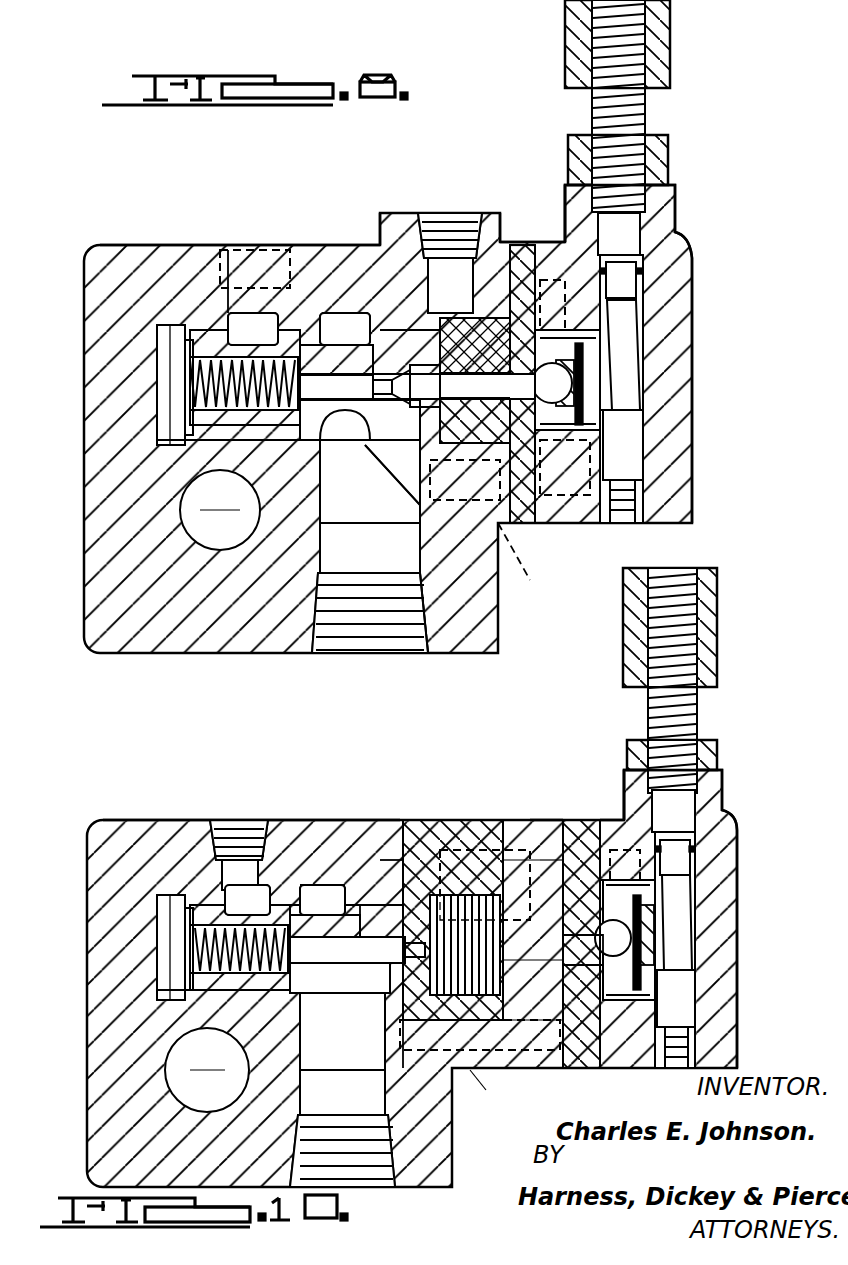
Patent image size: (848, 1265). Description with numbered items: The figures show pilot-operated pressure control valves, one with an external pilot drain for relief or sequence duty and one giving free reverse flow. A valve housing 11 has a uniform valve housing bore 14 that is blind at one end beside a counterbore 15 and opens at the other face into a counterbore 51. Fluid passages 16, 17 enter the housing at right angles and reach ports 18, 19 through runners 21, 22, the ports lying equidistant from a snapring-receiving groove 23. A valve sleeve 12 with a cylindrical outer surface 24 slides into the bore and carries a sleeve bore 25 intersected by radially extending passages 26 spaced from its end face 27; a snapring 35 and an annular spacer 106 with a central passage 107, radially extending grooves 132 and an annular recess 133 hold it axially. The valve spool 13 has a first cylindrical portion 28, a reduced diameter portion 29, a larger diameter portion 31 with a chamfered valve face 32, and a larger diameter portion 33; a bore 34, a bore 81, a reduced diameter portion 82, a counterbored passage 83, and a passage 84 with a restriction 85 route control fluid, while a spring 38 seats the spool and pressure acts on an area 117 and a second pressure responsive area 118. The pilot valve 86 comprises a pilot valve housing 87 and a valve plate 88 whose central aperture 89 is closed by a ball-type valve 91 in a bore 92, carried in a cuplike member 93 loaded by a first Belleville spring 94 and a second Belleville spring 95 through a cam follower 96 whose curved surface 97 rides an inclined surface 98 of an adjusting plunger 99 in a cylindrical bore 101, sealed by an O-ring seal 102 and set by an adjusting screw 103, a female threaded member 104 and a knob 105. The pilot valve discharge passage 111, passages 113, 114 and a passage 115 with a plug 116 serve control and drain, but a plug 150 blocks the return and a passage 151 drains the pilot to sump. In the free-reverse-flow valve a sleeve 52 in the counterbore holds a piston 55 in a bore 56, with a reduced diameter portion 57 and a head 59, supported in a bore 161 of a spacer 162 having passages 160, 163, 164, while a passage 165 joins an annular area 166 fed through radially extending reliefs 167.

In FIG. 8, the valve housing 11 is at (323, 228).
In FIG. 10, the valve housing 11 is at (323, 803).
In FIG. 8, the valve sleeve 12 is at (452, 285).
In FIG. 10, the valve sleeve 12 is at (392, 866).
In FIG. 10, the valve spool 13 is at (372, 910).
In FIG. 8, the valve housing bore 14 is at (388, 330).
In FIG. 10, the valve housing bore 14 is at (300, 905).
In FIG. 8, the counterbore 15 is at (160, 335).
In FIG. 10, the counterbore 15 is at (160, 900).
In FIG. 8, the fluid passage 16 is at (108, 560).
In FIG. 10, the fluid passage 16 is at (172, 1098).
In FIG. 8, the fluid passage 17 is at (322, 612).
In FIG. 10, the fluid passage 17 is at (300, 1128).
In FIG. 8, the port 18 is at (262, 258).
In FIG. 10, the port 18 is at (262, 870).
In FIG. 8, the port 19 is at (338, 330).
In FIG. 10, the port 19 is at (340, 870).
In FIG. 8, the runner 21 is at (220, 510).
In FIG. 10, the runner 21 is at (207, 1070).
In FIG. 8, the runner 22 is at (440, 556).
In FIG. 10, the runner 22 is at (323, 1094).
In FIG. 8, the snapring-receiving groove 23 is at (280, 325).
In FIG. 8, the cylindrical outer surface 24 is at (396, 530).
In FIG. 10, the cylindrical outer surface 24 is at (366, 1094).
In FIG. 8, the valve sleeve bore 25 is at (390, 470).
In FIG. 10, the valve sleeve bore 25 is at (361, 1062).
In FIG. 8, the radially extending passages 26 is at (350, 342).
In FIG. 10, the radially extending passages 26 is at (340, 914).
In FIG. 8, the end face 27 is at (372, 328).
In FIG. 10, the end face 27 is at (246, 990).
In FIG. 8, the first cylindrical portion 28 is at (352, 530).
In FIG. 10, the first cylindrical portion 28 is at (320, 1062).
In FIG. 8, the reduced diameter portion 29 is at (305, 425).
In FIG. 10, the reduced diameter portion 29 is at (292, 1000).
In FIG. 8, the larger diameter portion 31 is at (308, 285).
In FIG. 10, the larger diameter portion 31 is at (275, 885).
In FIG. 10, the chamfered valve face 32 is at (212, 860).
In FIG. 8, the larger diameter portion 33 is at (185, 440).
In FIG. 10, the larger diameter portion 33 is at (240, 949).
In FIG. 8, the bore 34 is at (180, 440).
In FIG. 10, the bore 34 is at (182, 993).
In FIG. 8, the snapring 35 is at (246, 500).
In FIG. 10, the snapring 35 is at (236, 1060).
In FIG. 8, the spring 38 is at (158, 372).
In FIG. 10, the spring 38 is at (158, 938).
In FIG. 8, the counterbore 51 is at (520, 262).
In FIG. 10, the counterbore 51 is at (482, 850).
In FIG. 10, the sleeve 52 is at (512, 850).
In FIG. 10, the piston 55 is at (548, 850).
In FIG. 10, the bore 56 is at (492, 822).
In FIG. 10, the reduced diameter portion 57 is at (530, 1013).
In FIG. 10, the head 59 is at (491, 885).
In FIG. 8, the bore 81 is at (345, 442).
In FIG. 10, the bore 81 is at (300, 1040).
In FIG. 8, the reduced diameter portion 82 is at (355, 378).
In FIG. 10, the reduced diameter portion 82 is at (440, 968).
In FIG. 8, the counterbored passage 83 is at (418, 372).
In FIG. 10, the counterbored passage 83 is at (436, 940).
In FIG. 8, the passage 84 is at (230, 300).
In FIG. 10, the passage 84 is at (200, 880).
In FIG. 8, the restriction 85 is at (240, 330).
In FIG. 10, the restriction 85 is at (222, 900).
In FIG. 8, the pilot valve 86 is at (697, 224).
In FIG. 10, the pilot valve 86 is at (740, 802).
In FIG. 8, the pilot valve housing 87 is at (640, 352).
In FIG. 10, the pilot valve housing 87 is at (700, 938).
In FIG. 8, the valve plate 88 is at (572, 240).
In FIG. 10, the valve plate 88 is at (622, 830).
In FIG. 8, the central aperture 89 is at (522, 352).
In FIG. 10, the central aperture 89 is at (605, 860).
In FIG. 8, the ball-type valve 91 is at (540, 380).
In FIG. 10, the ball-type valve 91 is at (605, 962).
In FIG. 10, the bore 92 is at (616, 918).
In FIG. 8, the cuplike member 93 is at (486, 421).
In FIG. 10, the cuplike member 93 is at (624, 929).
In FIG. 8, the first Belleville spring 94 is at (575, 350).
In FIG. 10, the first Belleville spring 94 is at (645, 1002).
In FIG. 8, the second Belleville spring 95 is at (643, 430).
In FIG. 10, the second Belleville spring 95 is at (668, 982).
In FIG. 8, the cam follower 96 is at (583, 385).
In FIG. 10, the cam follower 96 is at (642, 912).
In FIG. 8, the curved surface 97 is at (586, 420).
In FIG. 10, the curved surface 97 is at (632, 970).
In FIG. 8, the inclined surface 98 is at (572, 368).
In FIG. 10, the inclined surface 98 is at (656, 958).
In FIG. 8, the adjusting plunger 99 is at (637, 278).
In FIG. 10, the adjusting plunger 99 is at (692, 866).
In FIG. 8, the cylindrical bore 101 is at (645, 472).
In FIG. 10, the cylindrical bore 101 is at (696, 1000).
In FIG. 8, the O-ring seal 102 is at (645, 262).
In FIG. 10, the O-ring seal 102 is at (697, 846).
In FIG. 8, the adjusting screw 103 is at (646, 120).
In FIG. 10, the adjusting screw 103 is at (698, 712).
In FIG. 8, the female threaded member 104 is at (668, 158).
In FIG. 10, the female threaded member 104 is at (718, 758).
In FIG. 8, the knob 105 is at (660, 30).
In FIG. 10, the knob 105 is at (712, 628).
In FIG. 8, the annular spacer 106 is at (470, 500).
In FIG. 8, the central passage 107 is at (475, 358).
In FIG. 10, the pilot valve discharge passage 111 is at (428, 1062).
In FIG. 8, the passage 113 is at (553, 526).
In FIG. 8, the passage 114 is at (604, 526).
In FIG. 10, the passage 114 is at (632, 1070).
In FIG. 8, the passage 115 is at (450, 222).
In FIG. 8, the plug 116 is at (484, 250).
In FIG. 8, the area 117 is at (215, 432).
In FIG. 10, the area 117 is at (200, 1000).
In FIG. 8, the second pressure responsive area 118 is at (160, 420).
In FIG. 10, the second pressure responsive area 118 is at (165, 975).
In FIG. 8, the radially extending grooves 132 is at (512, 238).
In FIG. 8, the annular recess 133 is at (480, 435).
In FIG. 8, the plug 150 is at (531, 562).
In FIG. 8, the passage 151 is at (646, 522).
In FIG. 10, the passage 151 is at (690, 1052).
In FIG. 10, the passage 160 is at (540, 972).
In FIG. 10, the bore 161 is at (560, 818).
In FIG. 10, the spacer 162 is at (566, 1070).
In FIG. 10, the passage 163 is at (491, 1100).
In FIG. 10, the passage 164 is at (545, 1070).
In FIG. 10, the passage 165 is at (608, 818).
In FIG. 10, the annular area 166 is at (476, 1070).
In FIG. 10, the radially extending reliefs 167 is at (410, 1040).